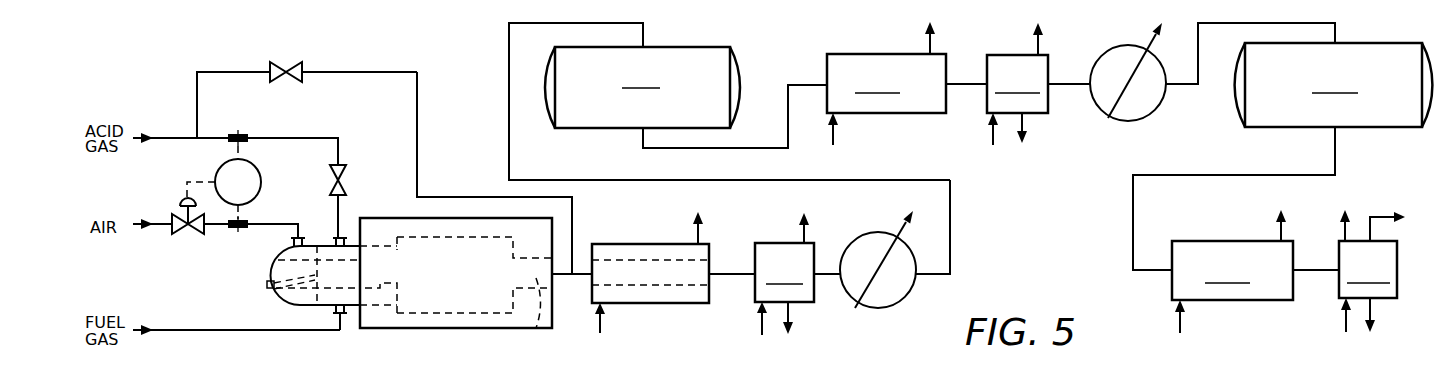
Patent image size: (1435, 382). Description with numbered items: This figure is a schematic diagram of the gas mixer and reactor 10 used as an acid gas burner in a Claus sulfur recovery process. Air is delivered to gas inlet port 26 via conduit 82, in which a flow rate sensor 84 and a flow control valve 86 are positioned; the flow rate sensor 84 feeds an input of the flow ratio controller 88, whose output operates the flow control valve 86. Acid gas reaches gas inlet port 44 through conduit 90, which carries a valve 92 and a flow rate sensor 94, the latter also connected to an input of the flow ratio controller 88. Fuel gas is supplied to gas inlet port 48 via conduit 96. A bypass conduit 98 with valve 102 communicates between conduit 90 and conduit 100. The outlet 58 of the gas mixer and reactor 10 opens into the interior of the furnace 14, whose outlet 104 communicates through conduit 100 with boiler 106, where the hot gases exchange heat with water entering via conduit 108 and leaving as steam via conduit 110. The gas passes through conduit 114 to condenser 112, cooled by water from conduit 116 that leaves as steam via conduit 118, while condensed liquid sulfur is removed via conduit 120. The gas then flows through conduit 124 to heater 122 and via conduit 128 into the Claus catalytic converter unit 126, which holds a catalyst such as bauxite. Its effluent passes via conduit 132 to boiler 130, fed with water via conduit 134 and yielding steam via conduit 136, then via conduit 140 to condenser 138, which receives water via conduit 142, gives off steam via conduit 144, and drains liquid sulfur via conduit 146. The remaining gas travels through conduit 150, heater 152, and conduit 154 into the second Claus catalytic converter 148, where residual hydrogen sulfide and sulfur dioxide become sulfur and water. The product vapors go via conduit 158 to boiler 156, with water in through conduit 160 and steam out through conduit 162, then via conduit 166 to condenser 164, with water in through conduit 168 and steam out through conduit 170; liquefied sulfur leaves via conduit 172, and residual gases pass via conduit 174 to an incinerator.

The gas mixer and reactor 10 is at (262, 273).
The furnace 14 is at (455, 328).
The gas inlet port 26 is at (303, 236).
The gas inlet port 44 is at (346, 236).
The gas inlet port 48 is at (344, 316).
The outlet 58 is at (360, 260).
The conduit 82 is at (291, 222).
The flow rate sensor 84 is at (236, 231).
The flow control valve 86 is at (188, 236).
The flow ratio controller 88 is at (255, 167).
The conduit 90 is at (338, 138).
The valve 92 is at (346, 186).
The flow rate sensor 94 is at (240, 133).
The conduit 96 is at (188, 328).
The bypass conduit 98 is at (420, 130).
The conduit 100 is at (577, 276).
The valve 102 is at (292, 62).
The outlet 104 is at (536, 330).
The boiler 106 is at (650, 303).
The conduit 108 is at (600, 323).
The conduit 110 is at (695, 232).
The condenser 112 is at (784, 272).
The conduit 114 is at (731, 273).
The conduit 116 is at (760, 326).
The conduit 118 is at (806, 232).
The conduit 120 is at (790, 318).
The heater 122 is at (904, 302).
The conduit 124 is at (826, 272).
The Claus catalytic converter unit 126 is at (642, 87).
The conduit 128 is at (599, 163).
The boiler 130 is at (886, 83).
The conduit 132 is at (760, 150).
The conduit 134 is at (834, 130).
The conduit 136 is at (903, 38).
The condenser 138 is at (1017, 84).
The conduit 140 is at (966, 86).
The conduit 142 is at (991, 138).
The conduit 144 is at (1035, 45).
The conduit 146 is at (1024, 126).
The second Claus catalytic converter 148 is at (1334, 85).
The conduit 150 is at (1066, 82).
The heater 152 is at (1152, 111).
The conduit 154 is at (1337, 33).
The boiler 156 is at (1232, 270).
The conduit 158 is at (1133, 216).
The conduit 160 is at (1178, 323).
The conduit 162 is at (1279, 228).
The condenser 164 is at (1368, 269).
The conduit 166 is at (1318, 272).
The conduit 168 is at (1340, 327).
The conduit 170 is at (1343, 228).
The conduit 172 is at (1372, 312).
The conduit 174 is at (1382, 215).